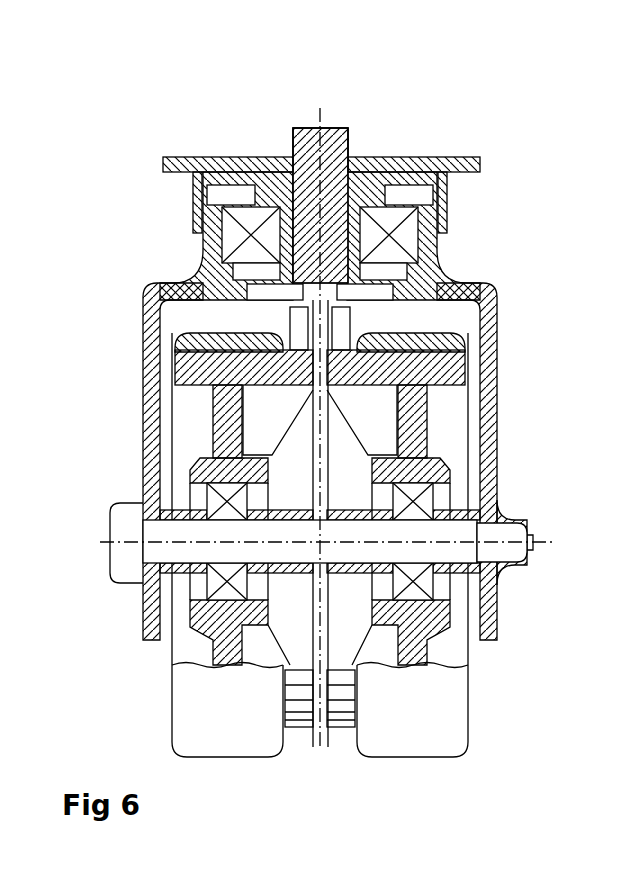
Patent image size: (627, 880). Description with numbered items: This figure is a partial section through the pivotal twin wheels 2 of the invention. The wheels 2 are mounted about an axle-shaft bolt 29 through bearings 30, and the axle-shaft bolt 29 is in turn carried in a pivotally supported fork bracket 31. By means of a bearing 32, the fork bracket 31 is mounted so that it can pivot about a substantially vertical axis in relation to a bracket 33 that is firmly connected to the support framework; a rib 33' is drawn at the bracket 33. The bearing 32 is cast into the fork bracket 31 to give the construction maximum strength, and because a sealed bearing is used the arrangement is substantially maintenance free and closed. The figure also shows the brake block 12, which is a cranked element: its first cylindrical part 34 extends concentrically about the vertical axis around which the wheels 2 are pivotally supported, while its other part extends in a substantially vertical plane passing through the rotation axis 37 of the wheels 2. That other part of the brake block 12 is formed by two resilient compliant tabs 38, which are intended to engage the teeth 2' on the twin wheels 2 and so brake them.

The pivotal wheels 2 is at (364, 548).
The teeth 2' is at (316, 749).
The brake block 12 is at (341, 128).
The axle-shaft bolt 29 is at (542, 526).
The bearings 30 is at (190, 462).
The fork bracket 31 is at (503, 330).
The bearing 32 is at (443, 235).
The bracket 33 is at (347, 134).
The mounting plate rib 33' is at (367, 190).
The first cylindrical part 34 is at (292, 150).
The rotation axis 37 is at (548, 549).
The resilient compliant tabs 38 is at (300, 337).